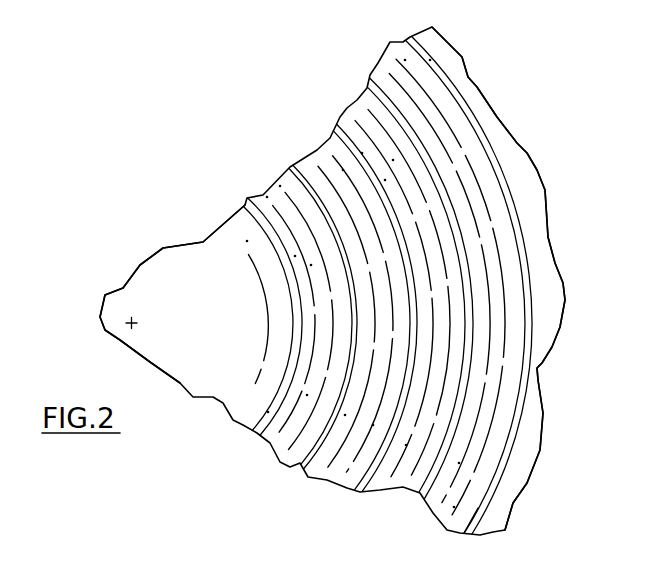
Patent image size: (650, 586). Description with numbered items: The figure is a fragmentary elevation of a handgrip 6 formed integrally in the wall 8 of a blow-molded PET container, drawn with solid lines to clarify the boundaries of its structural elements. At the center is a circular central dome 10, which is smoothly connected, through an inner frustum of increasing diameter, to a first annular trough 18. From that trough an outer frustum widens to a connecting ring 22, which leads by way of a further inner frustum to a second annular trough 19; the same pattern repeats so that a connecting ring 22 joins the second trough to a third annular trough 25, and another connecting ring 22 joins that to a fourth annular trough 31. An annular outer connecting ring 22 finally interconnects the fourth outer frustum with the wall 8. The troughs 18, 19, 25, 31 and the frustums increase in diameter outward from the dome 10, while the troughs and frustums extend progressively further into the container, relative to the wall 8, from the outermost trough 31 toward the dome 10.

The handgrip 6 is at (222, 194).
The wall 8 is at (530, 210).
The circular central dome 10 is at (232, 335).
The first annular trough 18 is at (258, 430).
The second annular trough 19 is at (300, 462).
The connecting ring 22 is at (505, 270).
The third annular trough 25 is at (353, 485).
The fourth annular trough 31 is at (421, 494).